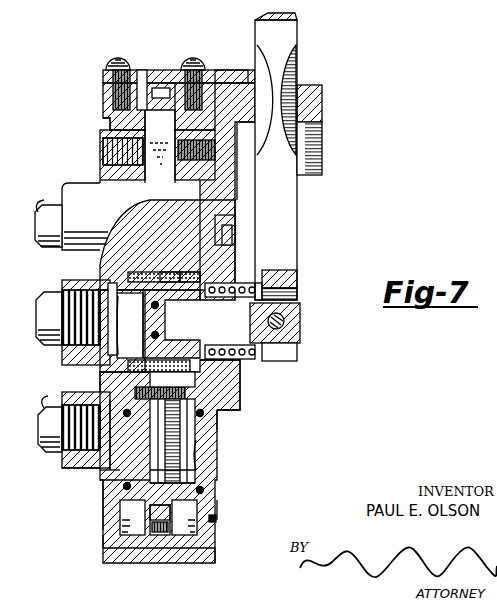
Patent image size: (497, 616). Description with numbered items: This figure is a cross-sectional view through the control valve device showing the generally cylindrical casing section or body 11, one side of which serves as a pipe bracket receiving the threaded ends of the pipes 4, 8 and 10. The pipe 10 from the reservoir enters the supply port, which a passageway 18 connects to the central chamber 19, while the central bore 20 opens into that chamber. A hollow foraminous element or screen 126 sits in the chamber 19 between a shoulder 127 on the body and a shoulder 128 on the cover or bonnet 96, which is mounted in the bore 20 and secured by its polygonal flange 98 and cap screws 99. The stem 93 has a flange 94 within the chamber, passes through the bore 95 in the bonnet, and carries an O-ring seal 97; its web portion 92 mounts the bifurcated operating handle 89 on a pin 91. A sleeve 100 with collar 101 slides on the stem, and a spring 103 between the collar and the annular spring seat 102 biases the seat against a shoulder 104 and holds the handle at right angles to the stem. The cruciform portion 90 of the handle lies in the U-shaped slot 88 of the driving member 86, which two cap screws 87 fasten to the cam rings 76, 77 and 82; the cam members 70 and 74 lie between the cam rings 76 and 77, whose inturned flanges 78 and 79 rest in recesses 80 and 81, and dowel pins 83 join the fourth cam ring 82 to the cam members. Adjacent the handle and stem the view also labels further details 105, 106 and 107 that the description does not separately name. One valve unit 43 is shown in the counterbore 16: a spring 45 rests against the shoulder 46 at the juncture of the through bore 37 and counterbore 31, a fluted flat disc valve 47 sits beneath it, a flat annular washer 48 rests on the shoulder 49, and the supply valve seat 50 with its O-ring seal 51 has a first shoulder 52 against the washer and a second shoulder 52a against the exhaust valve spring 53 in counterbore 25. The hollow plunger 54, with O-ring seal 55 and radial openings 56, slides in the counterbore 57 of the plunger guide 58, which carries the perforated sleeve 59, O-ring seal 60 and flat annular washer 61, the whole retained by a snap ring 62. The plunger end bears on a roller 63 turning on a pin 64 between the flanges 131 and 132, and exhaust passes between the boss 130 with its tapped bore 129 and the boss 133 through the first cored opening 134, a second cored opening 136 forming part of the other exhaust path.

The pipe 4 is at (35, 197).
The pipe 8 is at (40, 430).
The pipe 10 is at (38, 306).
The casing section or body 11 is at (122, 216).
The counterbore 16 is at (210, 466).
The passageway 18 is at (114, 331).
The central chamber 19 is at (110, 290).
The central bore 20 is at (150, 275).
The counterbore 25 is at (192, 416).
The counterbore 31 is at (218, 396).
The through bore 37 is at (135, 368).
The valve unit 43 is at (116, 484).
The spring 45 is at (100, 378).
The shoulder 46 is at (162, 368).
The fluted flat disc valve 47 is at (134, 400).
The flat annular washer 48 is at (236, 410).
The shoulder 49 is at (100, 392).
The supply valve seat 50 is at (62, 400).
The O-ring seal 51 is at (222, 420).
The first shoulder 52 is at (197, 440).
The second shoulder 52a is at (197, 455).
The exhaust valve spring 53 is at (125, 455).
The hollow plunger 54 is at (196, 481).
The O-ring seal 55 is at (116, 476).
The radially arranged openings 56 is at (214, 521).
The counterbore 57 is at (112, 506).
The plunger guide 58 is at (196, 496).
The perforated sleeve 59 is at (66, 463).
The O-ring seal 60 is at (110, 490).
The flat annular washer 61 is at (216, 505).
The snap ring 62 is at (216, 515).
The roller 63 is at (180, 545).
The pin 64 is at (146, 542).
The cam member 70 is at (160, 146).
The cam member 74 is at (161, 548).
The cam ring 76 is at (105, 104).
The cam ring 77 is at (180, 95).
The inturned flange 78 is at (103, 120).
The inturned flange 79 is at (226, 118).
The annular right angle recess 80 is at (112, 518).
The annular right angle recess 81 is at (216, 524).
The fourth cam ring 82 is at (140, 76).
The dowel pin 83 is at (160, 90).
The driving or actuating member 86 is at (105, 78).
The cap screw 87 is at (107, 64).
The U-shaped slot 88 is at (226, 82).
The operating handle 89 is at (285, 33).
The cruciform portion 90 is at (280, 70).
The pin 91 is at (285, 318).
The web portion 92 is at (290, 330).
The stem 93 is at (260, 292).
The flange 94 is at (108, 283).
The bore 95 is at (158, 305).
The cover or bonnet 96 is at (230, 362).
The O-ring seal 97 is at (158, 336).
The polygonal flange 98 is at (219, 226).
The cap screw 99 is at (233, 235).
The sleeve 100 is at (236, 348).
The collar 101 is at (300, 296).
The annular spring seat 102 is at (268, 354).
The spring 103 is at (236, 290).
The shoulder 104 is at (214, 294).
The lever notch 105 is at (238, 122).
The stop block 106 is at (310, 100).
The lever slot 107 is at (230, 150).
The foraminous element or screen 126 is at (170, 280).
The shoulder 127 is at (135, 280).
The shoulder 128 is at (197, 267).
The tapped bore 129 is at (103, 147).
The boss 130 is at (103, 168).
The flange 131 is at (104, 540).
The flange 132 is at (216, 556).
The boss 133 is at (180, 171).
The first cored opening 134 is at (146, 180).
The second cored opening 136 is at (150, 4).